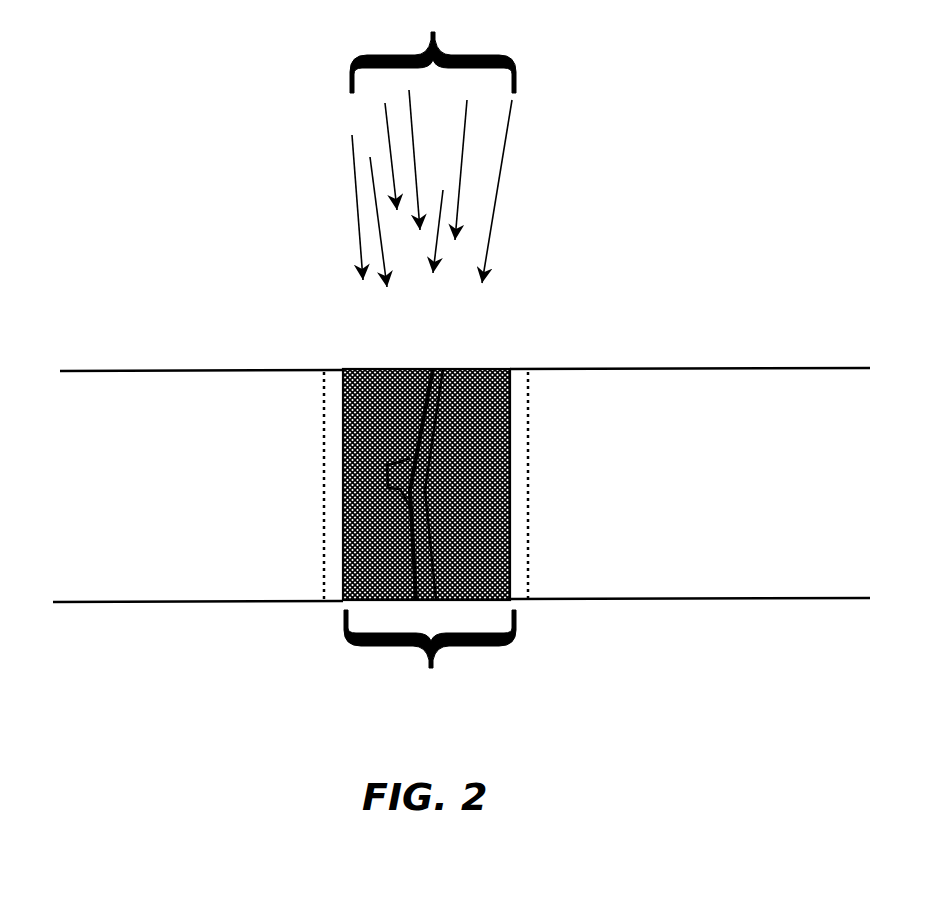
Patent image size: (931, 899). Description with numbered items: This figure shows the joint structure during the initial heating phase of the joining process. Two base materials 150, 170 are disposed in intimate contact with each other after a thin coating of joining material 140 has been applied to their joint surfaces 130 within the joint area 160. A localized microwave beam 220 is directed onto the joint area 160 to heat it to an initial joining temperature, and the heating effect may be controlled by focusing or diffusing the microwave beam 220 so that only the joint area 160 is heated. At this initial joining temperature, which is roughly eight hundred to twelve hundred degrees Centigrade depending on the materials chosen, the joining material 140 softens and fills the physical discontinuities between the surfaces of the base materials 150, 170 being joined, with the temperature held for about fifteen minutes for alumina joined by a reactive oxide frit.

The joint surfaces 130 is at (433, 369).
The joining material 140 is at (378, 369).
The base material 150 is at (205, 370).
The joint area 160 is at (427, 658).
The base material 170 is at (665, 367).
The microwave beam 220 is at (447, 53).